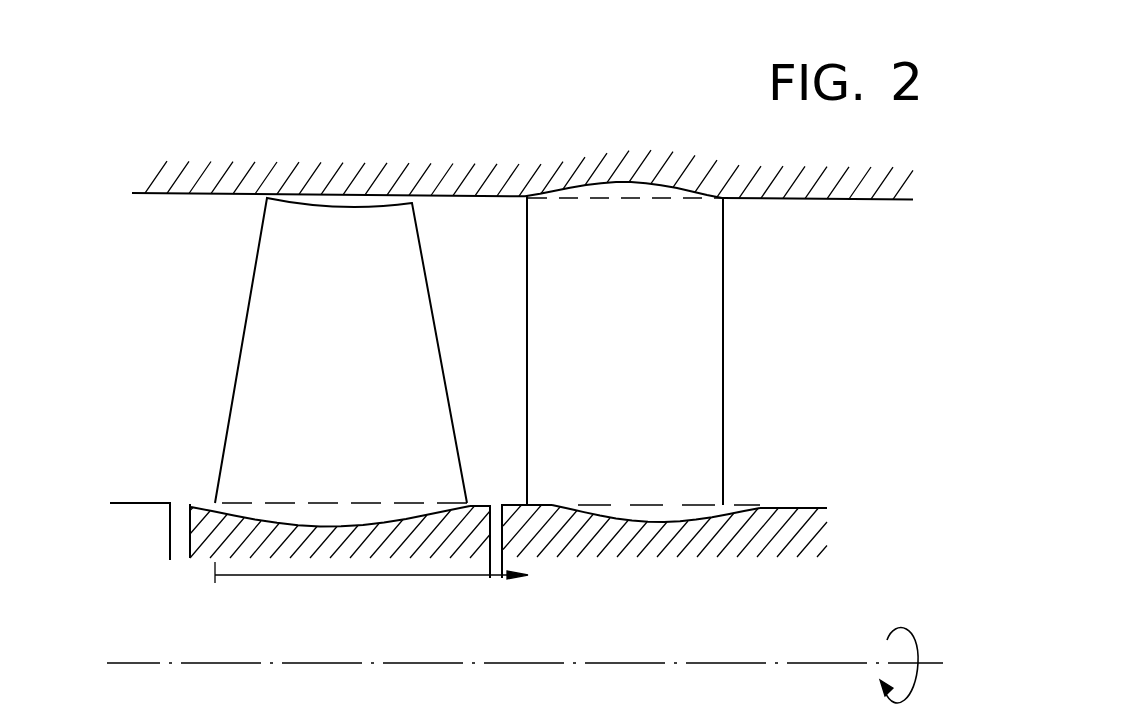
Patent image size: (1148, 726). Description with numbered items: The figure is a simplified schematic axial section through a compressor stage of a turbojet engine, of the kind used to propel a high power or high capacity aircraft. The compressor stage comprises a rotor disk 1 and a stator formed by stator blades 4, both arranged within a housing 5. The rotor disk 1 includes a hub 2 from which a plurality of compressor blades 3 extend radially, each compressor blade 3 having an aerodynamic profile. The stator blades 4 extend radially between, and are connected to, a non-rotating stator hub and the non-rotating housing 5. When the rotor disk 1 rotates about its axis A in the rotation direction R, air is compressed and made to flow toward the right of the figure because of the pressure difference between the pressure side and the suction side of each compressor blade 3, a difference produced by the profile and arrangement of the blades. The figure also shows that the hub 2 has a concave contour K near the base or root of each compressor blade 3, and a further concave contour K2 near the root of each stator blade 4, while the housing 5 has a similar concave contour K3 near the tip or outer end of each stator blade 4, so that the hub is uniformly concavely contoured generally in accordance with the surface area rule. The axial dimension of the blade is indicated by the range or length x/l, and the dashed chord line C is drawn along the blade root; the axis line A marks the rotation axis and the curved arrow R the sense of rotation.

The rotor disk 1 is at (323, 640).
The hub 2 is at (193, 506).
The compressor blades 3 is at (265, 318).
The stator blades 4 is at (710, 330).
The housing 5 is at (483, 195).
The concave contour K is at (345, 526).
The concave contour K2 is at (655, 522).
The concave contour K3 is at (622, 186).
The blade chord C is at (268, 503).
The axis A is at (733, 663).
The rotation direction R is at (906, 649).